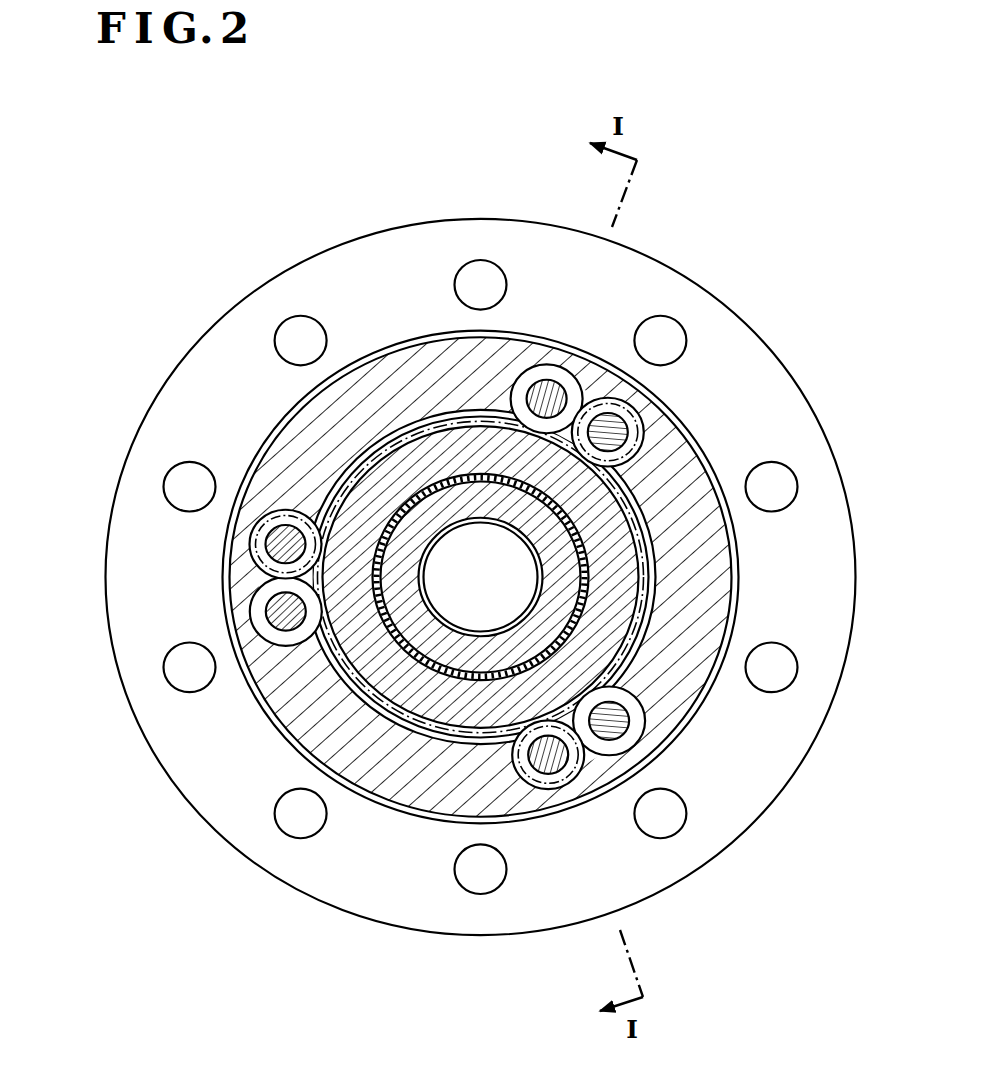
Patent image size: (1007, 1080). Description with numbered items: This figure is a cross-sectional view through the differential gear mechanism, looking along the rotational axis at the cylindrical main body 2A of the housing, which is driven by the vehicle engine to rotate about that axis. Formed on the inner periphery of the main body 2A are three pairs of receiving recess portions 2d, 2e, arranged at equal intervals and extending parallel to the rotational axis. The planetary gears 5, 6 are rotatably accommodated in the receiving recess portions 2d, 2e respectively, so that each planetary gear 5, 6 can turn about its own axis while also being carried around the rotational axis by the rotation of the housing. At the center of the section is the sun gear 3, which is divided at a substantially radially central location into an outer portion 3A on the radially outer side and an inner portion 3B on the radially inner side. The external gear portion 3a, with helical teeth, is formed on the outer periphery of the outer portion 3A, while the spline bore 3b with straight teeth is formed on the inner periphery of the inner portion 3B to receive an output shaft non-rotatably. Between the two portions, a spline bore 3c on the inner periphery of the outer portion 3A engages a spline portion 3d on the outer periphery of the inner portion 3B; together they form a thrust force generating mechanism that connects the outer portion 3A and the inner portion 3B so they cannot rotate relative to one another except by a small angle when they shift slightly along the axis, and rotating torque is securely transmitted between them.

The main body 2A is at (768, 347).
The receiving recess portion 2d is at (630, 428).
The receiving recess portion 2e is at (547, 378).
The sun gear 3 is at (392, 422).
The outer portion 3A is at (432, 457).
The inner portion 3B is at (480, 497).
The external gear portion 3a is at (390, 665).
The spline bore 3b is at (501, 520).
The spline bore 3c is at (441, 657).
The spline portion 3d is at (467, 683).
The planetary gear 5 is at (643, 398).
The planetary gear 6 is at (594, 369).